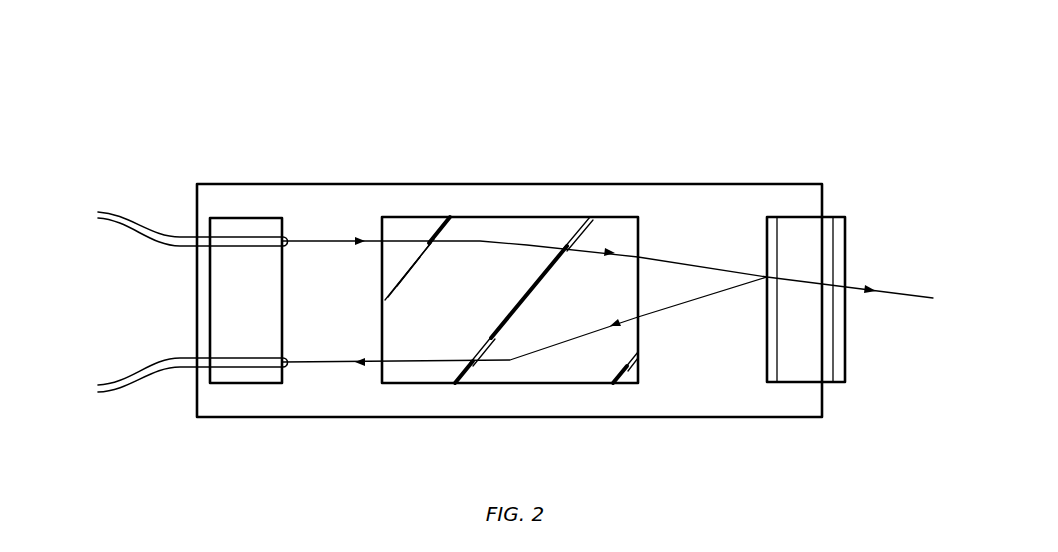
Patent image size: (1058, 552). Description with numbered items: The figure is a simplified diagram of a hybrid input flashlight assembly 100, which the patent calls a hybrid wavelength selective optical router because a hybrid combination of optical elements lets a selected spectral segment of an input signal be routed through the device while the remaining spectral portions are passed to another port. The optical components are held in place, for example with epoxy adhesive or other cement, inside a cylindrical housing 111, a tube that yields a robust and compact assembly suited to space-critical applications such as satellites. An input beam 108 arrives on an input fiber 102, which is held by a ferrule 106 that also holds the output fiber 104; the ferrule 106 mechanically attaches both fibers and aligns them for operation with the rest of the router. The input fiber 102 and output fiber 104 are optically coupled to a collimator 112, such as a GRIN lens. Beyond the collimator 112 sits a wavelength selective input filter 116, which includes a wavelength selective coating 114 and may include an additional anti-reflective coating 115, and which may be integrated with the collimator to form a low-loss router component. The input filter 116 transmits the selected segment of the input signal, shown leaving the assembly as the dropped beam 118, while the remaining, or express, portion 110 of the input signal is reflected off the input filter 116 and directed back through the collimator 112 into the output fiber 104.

The hybrid input flashlight assembly 100 is at (740, 90).
The input fiber 102 is at (122, 225).
The output fiber 104 is at (122, 381).
The ferrule 106 is at (245, 380).
The input beam 108 is at (328, 240).
The express portion 110 is at (330, 367).
The cylindrical housing 111 is at (435, 183).
The collimator 112 is at (515, 217).
The wavelength selective coating 114 is at (772, 216).
The anti-reflective coating 115 is at (847, 240).
The wavelength selective input filter 116 is at (829, 217).
The dropped beam 118 is at (885, 285).